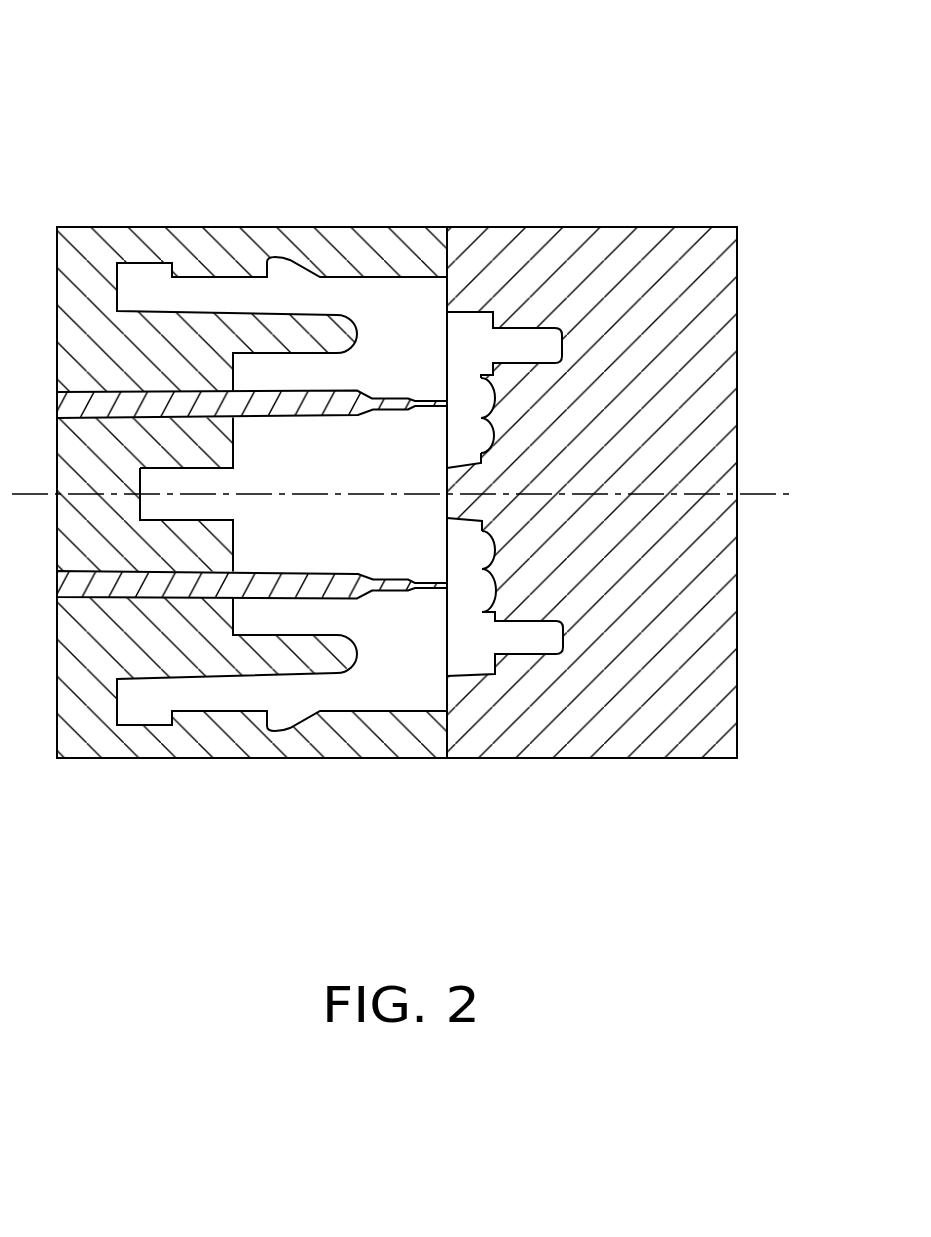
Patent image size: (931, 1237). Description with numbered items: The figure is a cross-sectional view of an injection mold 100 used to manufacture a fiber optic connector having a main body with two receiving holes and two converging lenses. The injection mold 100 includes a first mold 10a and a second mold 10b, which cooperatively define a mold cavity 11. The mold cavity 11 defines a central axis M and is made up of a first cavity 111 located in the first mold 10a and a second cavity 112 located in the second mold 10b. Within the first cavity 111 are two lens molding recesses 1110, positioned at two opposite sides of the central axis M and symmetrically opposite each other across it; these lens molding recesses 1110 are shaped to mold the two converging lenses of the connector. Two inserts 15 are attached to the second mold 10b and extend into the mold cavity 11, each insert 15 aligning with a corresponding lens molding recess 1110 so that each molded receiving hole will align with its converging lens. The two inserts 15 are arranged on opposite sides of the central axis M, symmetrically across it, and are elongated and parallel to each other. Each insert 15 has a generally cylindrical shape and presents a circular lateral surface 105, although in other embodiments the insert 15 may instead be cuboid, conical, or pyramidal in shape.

The injection mold 100 is at (413, 468).
The first mold 10a is at (547, 260).
The second mold 10b is at (356, 253).
The mold cavity 11 is at (466, 587).
The first cavity 111 is at (631, 581).
The second cavity 112 is at (345, 693).
The lens molding recess 1110 is at (493, 393).
The insert 15 is at (252, 381).
The circular lateral surface 105 is at (297, 388).
The central axis M is at (413, 491).